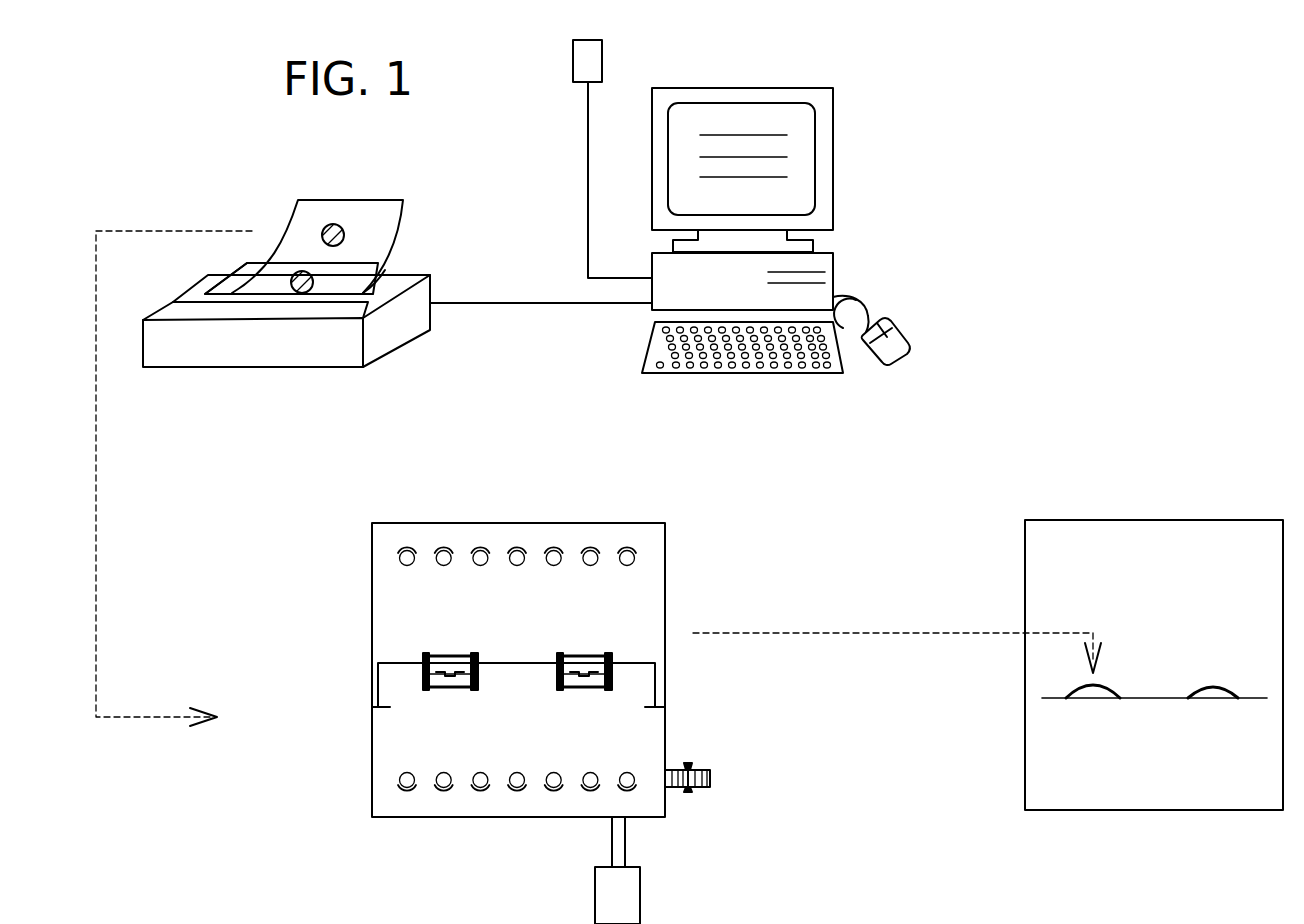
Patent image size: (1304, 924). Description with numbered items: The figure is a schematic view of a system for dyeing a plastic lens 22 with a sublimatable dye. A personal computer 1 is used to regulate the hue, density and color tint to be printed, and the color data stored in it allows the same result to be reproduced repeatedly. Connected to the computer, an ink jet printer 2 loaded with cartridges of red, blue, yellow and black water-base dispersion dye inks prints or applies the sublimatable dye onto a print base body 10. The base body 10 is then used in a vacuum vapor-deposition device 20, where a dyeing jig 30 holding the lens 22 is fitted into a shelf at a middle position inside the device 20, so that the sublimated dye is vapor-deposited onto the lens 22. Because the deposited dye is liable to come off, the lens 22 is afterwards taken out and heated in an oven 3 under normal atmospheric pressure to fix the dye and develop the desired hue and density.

The personal computer 1 is at (872, 238).
The ink jet printer 2 is at (390, 333).
The oven 3 is at (1025, 550).
The print base body 10 is at (267, 203).
The vacuum vapor-deposition device 20 is at (665, 553).
The plastic lens 22 is at (457, 667).
The dyeing jig 30 is at (608, 642).